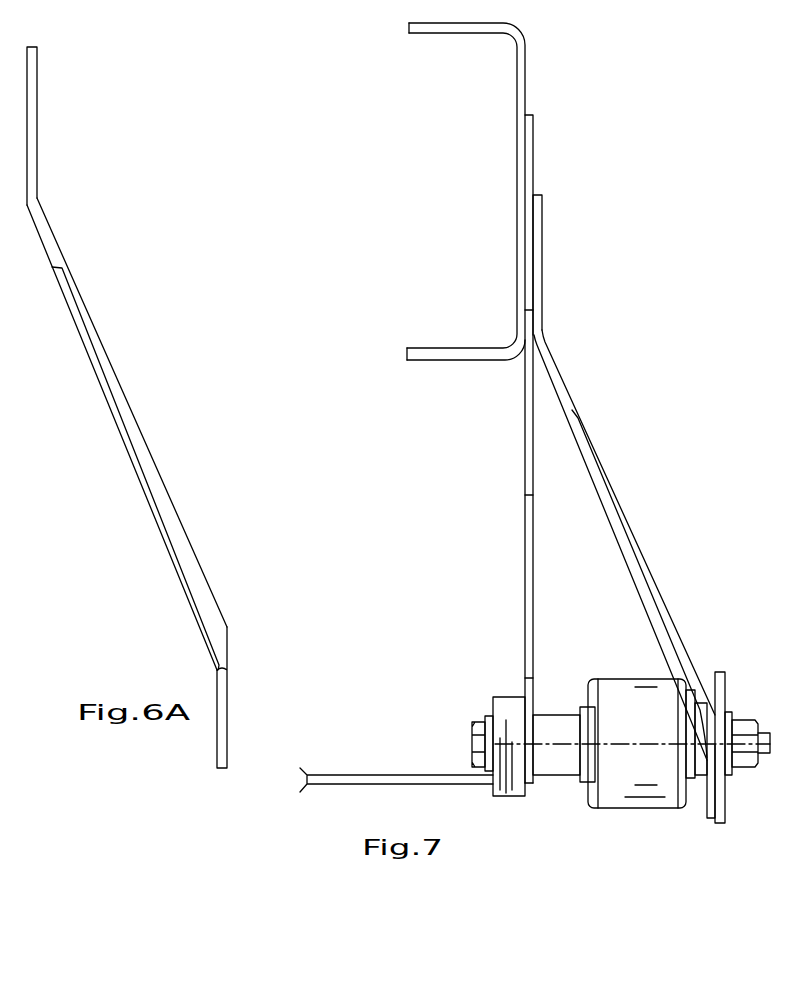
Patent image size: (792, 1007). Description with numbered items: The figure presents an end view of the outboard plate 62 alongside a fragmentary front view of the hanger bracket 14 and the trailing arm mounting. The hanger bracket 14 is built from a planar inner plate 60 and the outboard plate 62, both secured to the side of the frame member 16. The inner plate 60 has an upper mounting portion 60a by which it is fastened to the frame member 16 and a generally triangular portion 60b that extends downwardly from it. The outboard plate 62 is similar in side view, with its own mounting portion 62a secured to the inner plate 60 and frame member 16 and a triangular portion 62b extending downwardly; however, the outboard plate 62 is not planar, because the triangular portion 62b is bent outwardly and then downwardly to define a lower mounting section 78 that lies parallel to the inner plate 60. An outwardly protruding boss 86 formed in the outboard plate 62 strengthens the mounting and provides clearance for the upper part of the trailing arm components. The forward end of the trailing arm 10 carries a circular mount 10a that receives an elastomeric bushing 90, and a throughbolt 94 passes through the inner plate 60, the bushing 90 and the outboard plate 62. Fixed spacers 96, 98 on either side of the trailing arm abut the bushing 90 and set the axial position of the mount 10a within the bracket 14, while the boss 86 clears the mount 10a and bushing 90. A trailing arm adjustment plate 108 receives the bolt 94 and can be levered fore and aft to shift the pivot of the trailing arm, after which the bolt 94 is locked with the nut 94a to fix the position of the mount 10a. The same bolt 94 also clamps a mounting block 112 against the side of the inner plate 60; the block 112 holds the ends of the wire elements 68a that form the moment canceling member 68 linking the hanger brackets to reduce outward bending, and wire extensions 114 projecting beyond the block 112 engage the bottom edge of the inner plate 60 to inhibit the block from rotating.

In FIG. 7, the trailing arm 10 is at (641, 757).
In FIG. 7, the circular mount 10a is at (615, 690).
In FIG. 7, the hanger bracket 14 is at (566, 445).
In FIG. 7, the frame member 16 is at (525, 65).
In FIG. 7, the inner plate 60 is at (528, 449).
In FIG. 7, the mounting portion 60a is at (531, 133).
In FIG. 7, the triangular portion 60b is at (528, 518).
In FIG. 6A, the outboard plate 62 is at (147, 407).
In FIG. 7, the outboard plate 62 is at (629, 531).
In FIG. 6A, the mounting portion 62a is at (34, 117).
In FIG. 7, the mounting portion 62a is at (541, 256).
In FIG. 6A, the triangular portion 62b is at (122, 398).
In FIG. 7, the triangular portion 62b is at (598, 440).
In FIG. 7, the moment canceling member 68 is at (396, 742).
In FIG. 7, the wire element 68a is at (405, 778).
In FIG. 6A, the mounting section 78 is at (223, 720).
In FIG. 7, the mounting section 78 is at (708, 800).
In FIG. 6A, the boss 86 is at (207, 606).
In FIG. 7, the boss 86 is at (686, 648).
In FIG. 7, the elastomeric bushing 90 is at (580, 786).
In FIG. 7, the throughbolt 94 is at (758, 730).
In FIG. 7, the nut 94a is at (738, 762).
In FIG. 7, the spacer 96 is at (556, 728).
In FIG. 7, the spacer 98 is at (700, 758).
In FIG. 7, the trailing arm adjustment plate 108 is at (718, 692).
In FIG. 7, the mounting block 112 is at (510, 698).
In FIG. 7, the wire extension 114 is at (538, 790).